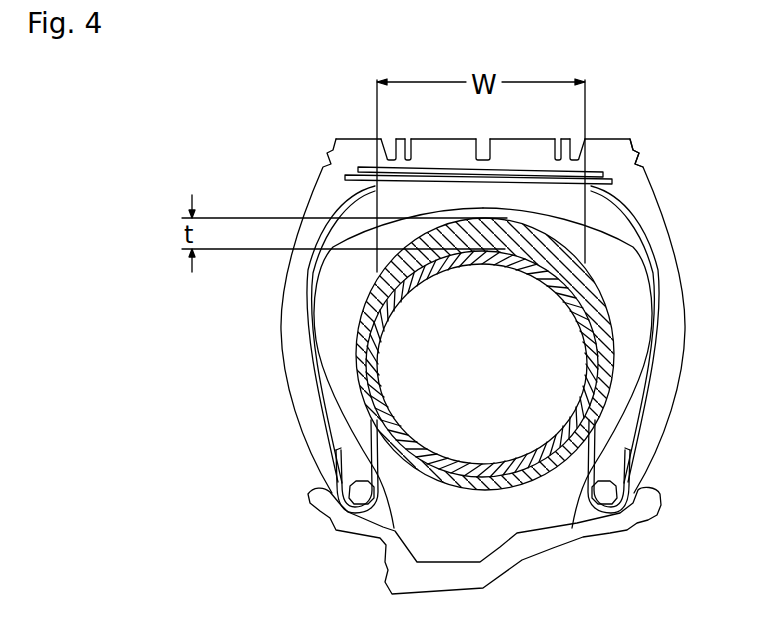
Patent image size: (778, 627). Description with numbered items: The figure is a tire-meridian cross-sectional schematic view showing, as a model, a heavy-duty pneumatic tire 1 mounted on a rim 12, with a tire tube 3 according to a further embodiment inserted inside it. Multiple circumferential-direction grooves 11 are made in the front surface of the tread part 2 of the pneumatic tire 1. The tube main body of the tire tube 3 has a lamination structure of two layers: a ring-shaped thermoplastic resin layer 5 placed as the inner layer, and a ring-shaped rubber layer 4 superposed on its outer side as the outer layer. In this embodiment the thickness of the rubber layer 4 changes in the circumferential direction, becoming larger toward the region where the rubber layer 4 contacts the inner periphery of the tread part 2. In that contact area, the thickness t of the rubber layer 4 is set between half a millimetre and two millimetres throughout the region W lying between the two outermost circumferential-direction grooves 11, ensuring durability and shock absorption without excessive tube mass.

The heavy-duty pneumatic tire 1 is at (680, 248).
The tread part 2 is at (612, 140).
The tire tube 3 is at (488, 354).
The ring-shaped rubber layer 4 is at (597, 298).
The ring-shaped thermoplastic resin layer 5 is at (590, 405).
The circumferential-direction grooves 11 is at (387, 158).
The rim 12 is at (526, 566).